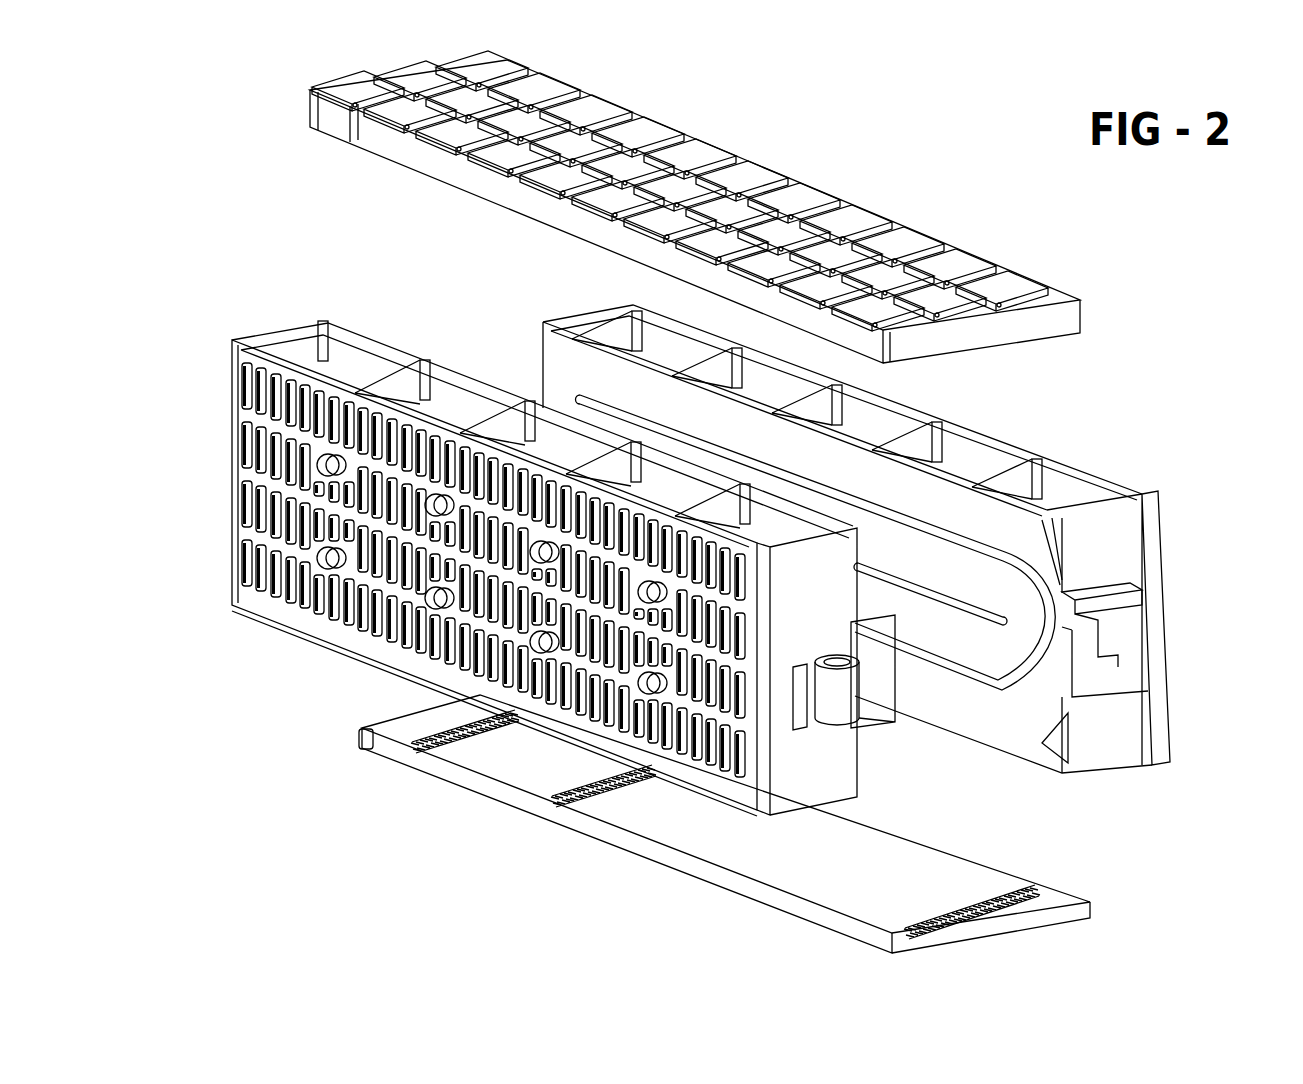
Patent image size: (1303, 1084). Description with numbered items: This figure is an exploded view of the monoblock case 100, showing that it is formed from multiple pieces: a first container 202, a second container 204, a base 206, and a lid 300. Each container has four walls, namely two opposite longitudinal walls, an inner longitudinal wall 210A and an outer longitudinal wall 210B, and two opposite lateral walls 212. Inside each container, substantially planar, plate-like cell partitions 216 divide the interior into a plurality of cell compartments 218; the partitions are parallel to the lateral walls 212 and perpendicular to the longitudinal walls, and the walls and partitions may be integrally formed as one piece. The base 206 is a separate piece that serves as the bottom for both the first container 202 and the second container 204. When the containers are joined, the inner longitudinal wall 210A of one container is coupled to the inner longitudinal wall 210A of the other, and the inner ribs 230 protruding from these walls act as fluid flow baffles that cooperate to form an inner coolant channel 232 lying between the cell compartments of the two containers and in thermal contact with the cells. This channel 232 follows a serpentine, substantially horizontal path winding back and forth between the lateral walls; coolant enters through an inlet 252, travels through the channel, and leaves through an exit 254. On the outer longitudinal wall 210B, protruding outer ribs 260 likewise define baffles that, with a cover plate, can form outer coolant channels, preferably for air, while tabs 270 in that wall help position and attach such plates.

The monoblock case 100 is at (1184, 368).
The first container 202 is at (504, 569).
The second container 204 is at (913, 549).
The base 206 is at (702, 880).
The lid 300 is at (850, 197).
The inner longitudinal wall 210A is at (937, 555).
The outer longitudinal wall 210B is at (238, 388).
The lateral wall 212 is at (266, 340).
The cell partition 216 is at (393, 350).
The cell compartment 218 is at (463, 410).
The inner rib 230 is at (940, 680).
The inner coolant channel 232 is at (1000, 715).
The inlet 252 is at (836, 658).
The exit 254 is at (1131, 672).
The outer rib 260 is at (270, 612).
The tab 270 is at (330, 648).